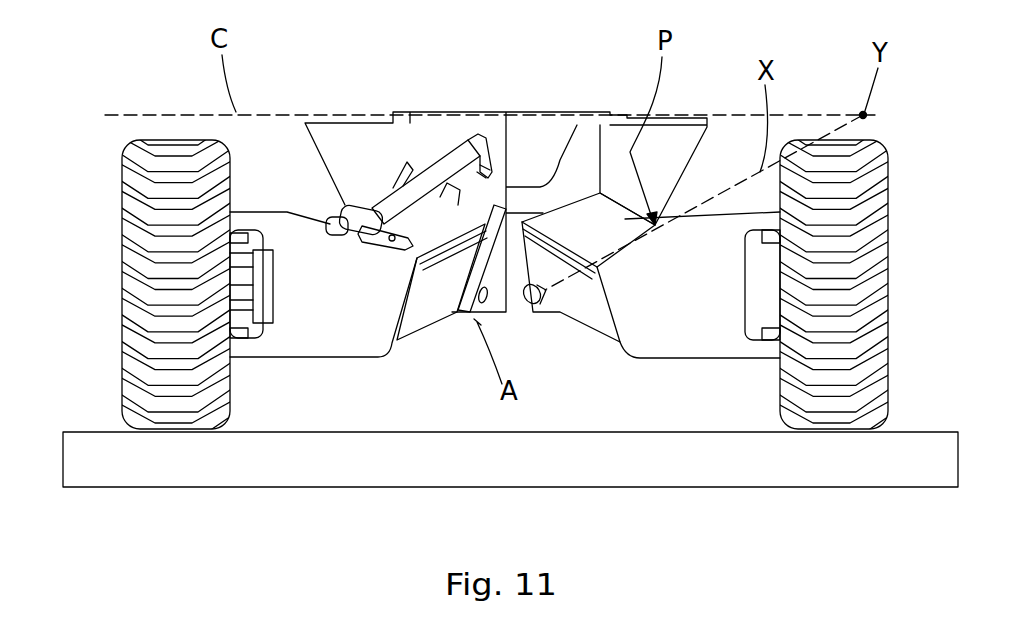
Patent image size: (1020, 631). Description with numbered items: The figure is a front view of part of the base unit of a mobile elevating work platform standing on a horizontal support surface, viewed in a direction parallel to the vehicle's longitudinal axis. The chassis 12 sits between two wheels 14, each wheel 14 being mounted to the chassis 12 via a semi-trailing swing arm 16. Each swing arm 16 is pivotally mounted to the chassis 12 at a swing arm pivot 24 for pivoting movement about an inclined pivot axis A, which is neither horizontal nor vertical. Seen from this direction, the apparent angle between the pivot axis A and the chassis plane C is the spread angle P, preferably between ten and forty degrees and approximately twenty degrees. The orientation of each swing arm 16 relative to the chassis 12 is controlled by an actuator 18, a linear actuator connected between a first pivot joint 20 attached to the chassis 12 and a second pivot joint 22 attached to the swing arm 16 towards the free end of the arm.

The chassis 12 is at (378, 150).
The wheel 14 is at (140, 335).
The semi-trailing swing arm 16 is at (415, 313).
The actuator 18 is at (420, 185).
The first pivot joint 20 is at (468, 142).
The second pivot joint 22 is at (342, 208).
The swing arm pivot 24 is at (475, 315).